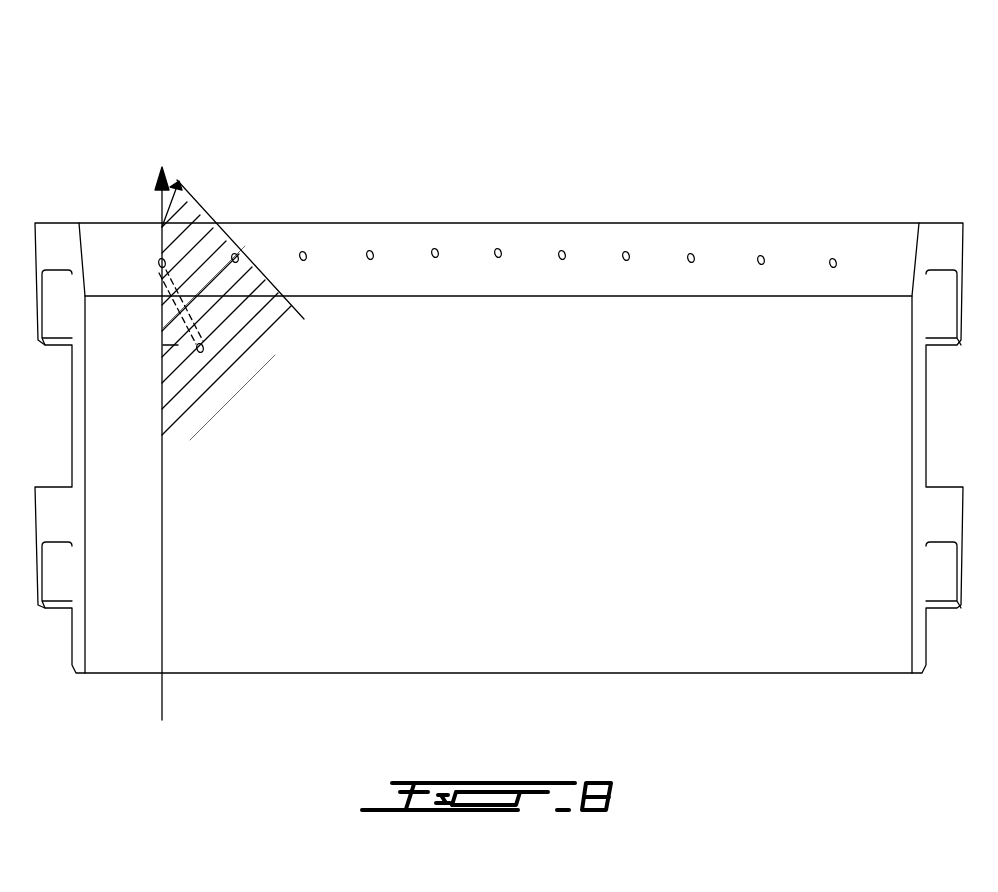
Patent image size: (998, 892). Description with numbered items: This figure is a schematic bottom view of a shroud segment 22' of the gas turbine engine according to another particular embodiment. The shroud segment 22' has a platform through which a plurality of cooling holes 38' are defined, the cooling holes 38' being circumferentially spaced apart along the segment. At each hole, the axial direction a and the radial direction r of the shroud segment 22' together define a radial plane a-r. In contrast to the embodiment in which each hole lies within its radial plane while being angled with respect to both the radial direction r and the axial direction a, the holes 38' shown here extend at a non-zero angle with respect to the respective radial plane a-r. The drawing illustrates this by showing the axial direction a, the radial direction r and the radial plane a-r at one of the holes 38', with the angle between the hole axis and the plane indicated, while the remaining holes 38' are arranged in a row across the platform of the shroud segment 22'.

The shroud segment 22' is at (499, 354).
The cooling holes 38' is at (257, 271).
The axial direction a is at (162, 210).
The radial direction r is at (193, 197).
The radial plane a-r is at (208, 205).